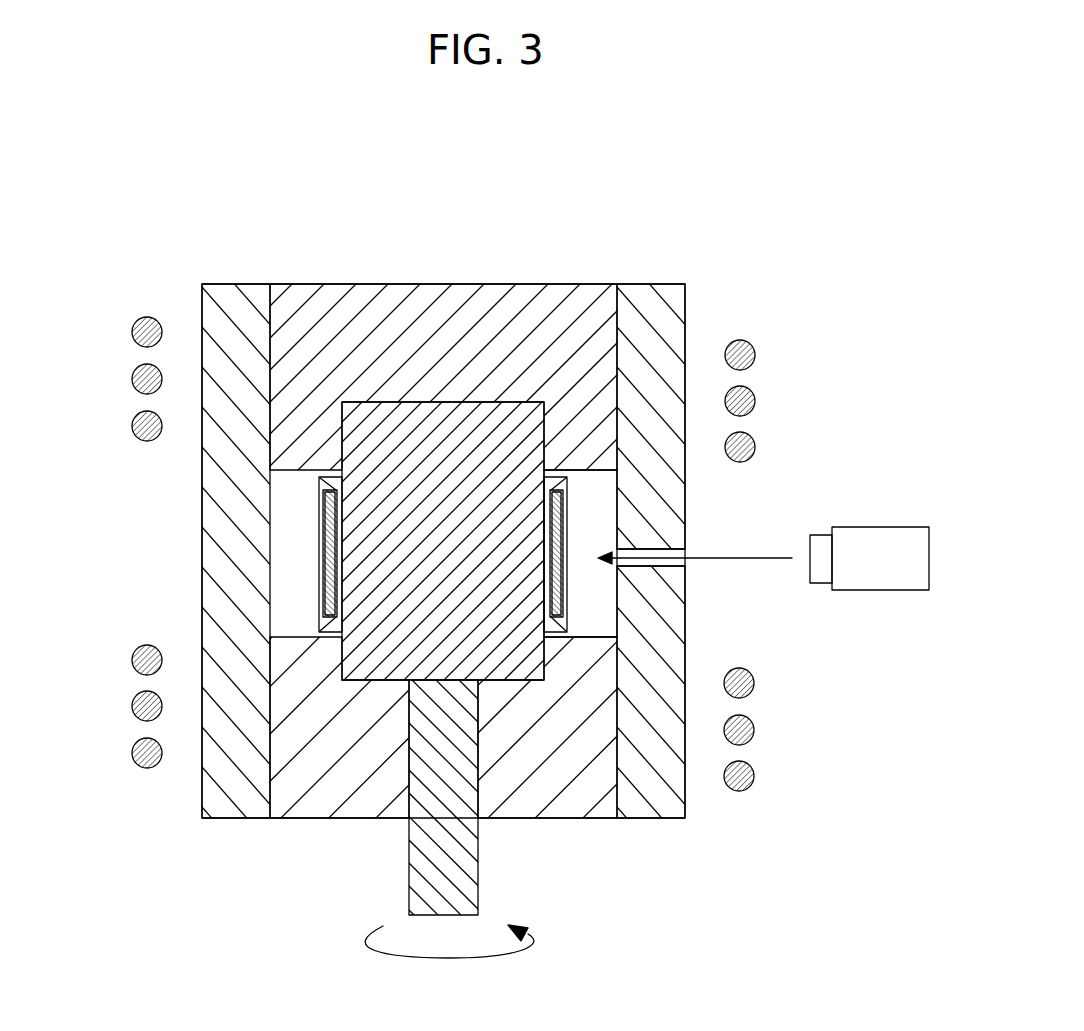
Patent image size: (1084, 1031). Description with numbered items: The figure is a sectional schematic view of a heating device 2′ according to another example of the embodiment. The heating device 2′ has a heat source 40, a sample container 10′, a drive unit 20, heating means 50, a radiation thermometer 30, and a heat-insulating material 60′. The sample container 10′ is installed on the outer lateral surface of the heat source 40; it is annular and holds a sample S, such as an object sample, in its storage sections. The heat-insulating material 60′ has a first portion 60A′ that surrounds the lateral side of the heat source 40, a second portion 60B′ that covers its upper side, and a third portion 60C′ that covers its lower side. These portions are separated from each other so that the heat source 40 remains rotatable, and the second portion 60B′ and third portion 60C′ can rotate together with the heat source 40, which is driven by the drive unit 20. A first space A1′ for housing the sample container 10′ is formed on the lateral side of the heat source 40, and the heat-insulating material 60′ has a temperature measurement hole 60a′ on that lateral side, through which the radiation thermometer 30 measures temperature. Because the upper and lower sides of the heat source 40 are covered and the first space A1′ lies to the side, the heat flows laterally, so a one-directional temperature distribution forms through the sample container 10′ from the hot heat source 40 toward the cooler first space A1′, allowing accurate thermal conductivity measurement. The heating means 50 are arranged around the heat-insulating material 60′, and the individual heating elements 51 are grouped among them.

The heating device 2′ is at (735, 170).
The heat-insulating material 60′ is at (641, 278).
The first portion 60A′ is at (660, 323).
The second portion 60B′ is at (563, 306).
The third portion 60C′ is at (571, 802).
The temperature measurement hole 60a′ is at (678, 566).
The first space A1′ is at (593, 613).
The heat source 40 is at (374, 690).
The drive unit 20 is at (458, 873).
The sample container 10′ is at (322, 553).
The sample S is at (557, 583).
The radiation thermometer 30 is at (883, 527).
The heating means 50 is at (128, 315).
The heating coil element 51 is at (755, 683).